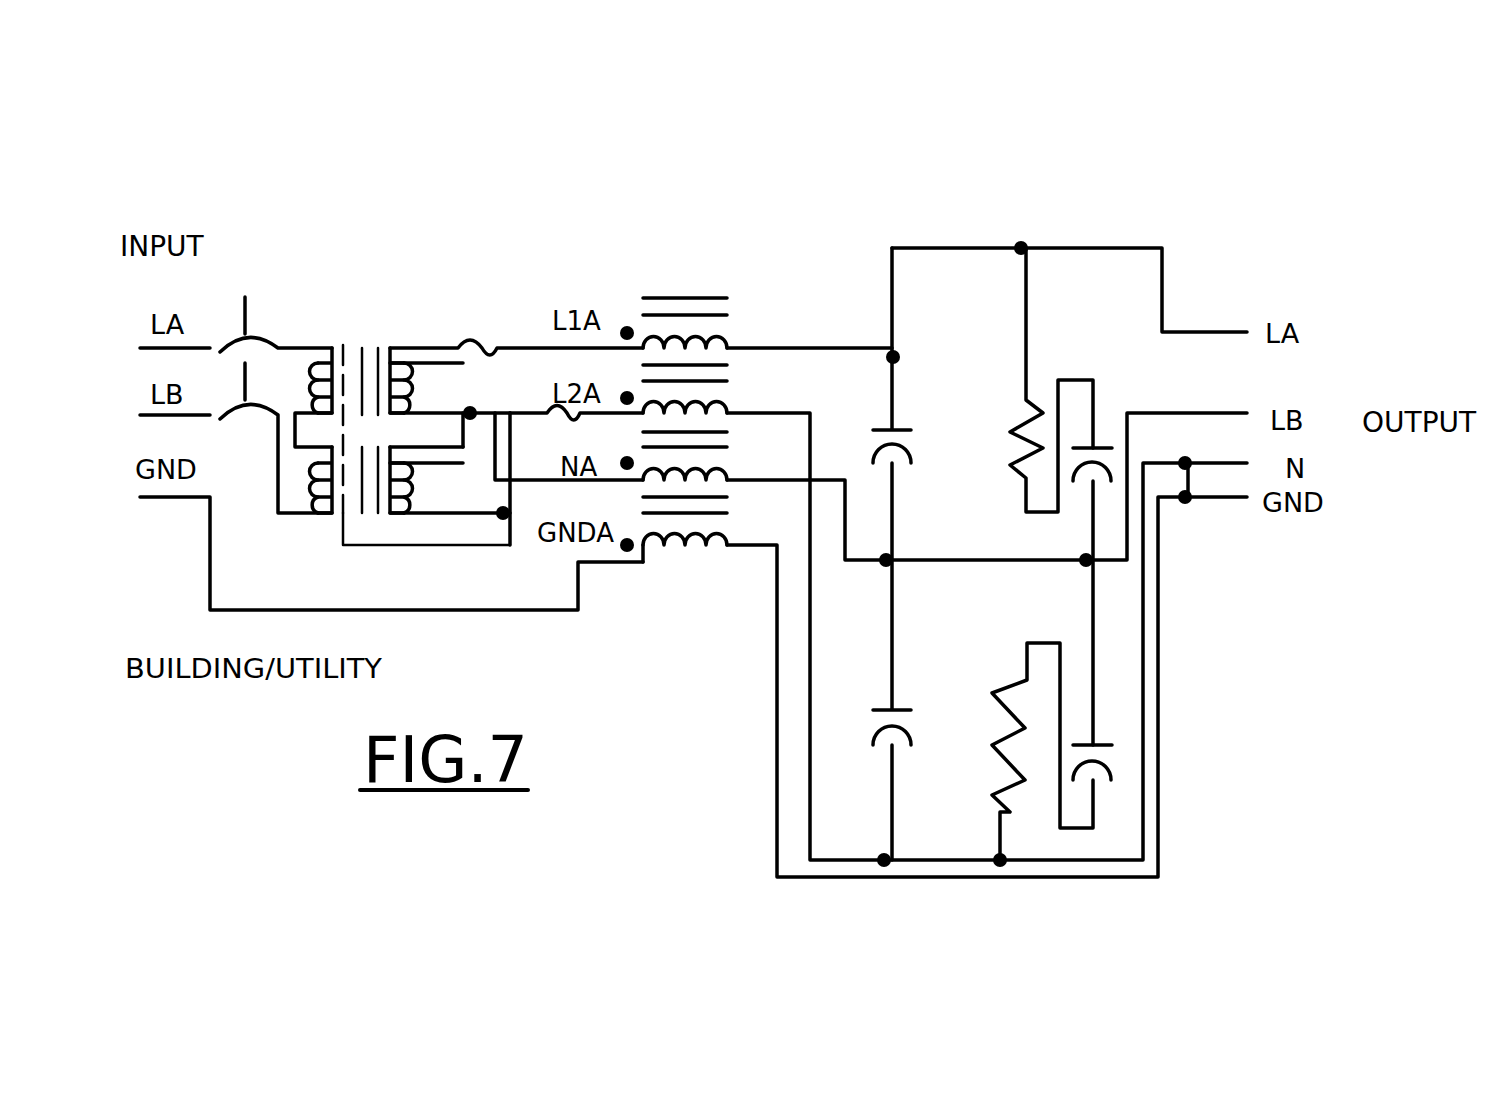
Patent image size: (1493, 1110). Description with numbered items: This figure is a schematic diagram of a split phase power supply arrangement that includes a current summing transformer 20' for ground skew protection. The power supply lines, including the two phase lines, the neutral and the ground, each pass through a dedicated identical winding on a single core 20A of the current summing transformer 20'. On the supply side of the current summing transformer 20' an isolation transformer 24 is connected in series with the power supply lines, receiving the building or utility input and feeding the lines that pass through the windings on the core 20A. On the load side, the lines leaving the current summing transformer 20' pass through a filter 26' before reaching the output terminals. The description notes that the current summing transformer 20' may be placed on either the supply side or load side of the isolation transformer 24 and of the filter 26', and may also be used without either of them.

The current summing transformer 20' is at (721, 375).
The single core 20A is at (688, 277).
The isolation transformer 24 is at (349, 309).
The filter 26' is at (987, 519).